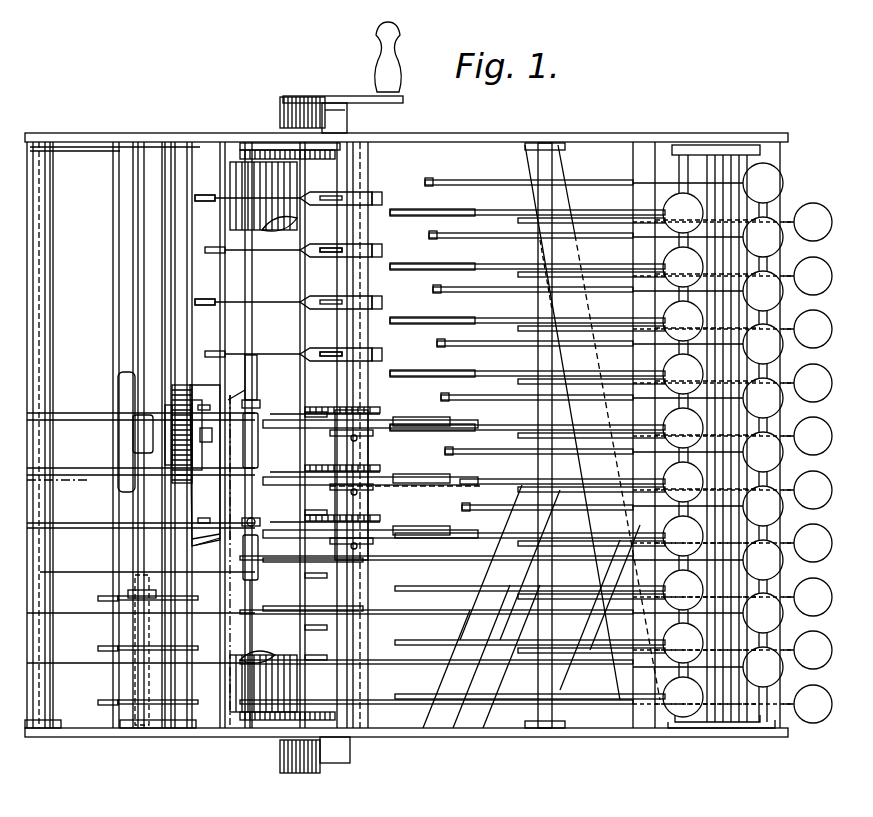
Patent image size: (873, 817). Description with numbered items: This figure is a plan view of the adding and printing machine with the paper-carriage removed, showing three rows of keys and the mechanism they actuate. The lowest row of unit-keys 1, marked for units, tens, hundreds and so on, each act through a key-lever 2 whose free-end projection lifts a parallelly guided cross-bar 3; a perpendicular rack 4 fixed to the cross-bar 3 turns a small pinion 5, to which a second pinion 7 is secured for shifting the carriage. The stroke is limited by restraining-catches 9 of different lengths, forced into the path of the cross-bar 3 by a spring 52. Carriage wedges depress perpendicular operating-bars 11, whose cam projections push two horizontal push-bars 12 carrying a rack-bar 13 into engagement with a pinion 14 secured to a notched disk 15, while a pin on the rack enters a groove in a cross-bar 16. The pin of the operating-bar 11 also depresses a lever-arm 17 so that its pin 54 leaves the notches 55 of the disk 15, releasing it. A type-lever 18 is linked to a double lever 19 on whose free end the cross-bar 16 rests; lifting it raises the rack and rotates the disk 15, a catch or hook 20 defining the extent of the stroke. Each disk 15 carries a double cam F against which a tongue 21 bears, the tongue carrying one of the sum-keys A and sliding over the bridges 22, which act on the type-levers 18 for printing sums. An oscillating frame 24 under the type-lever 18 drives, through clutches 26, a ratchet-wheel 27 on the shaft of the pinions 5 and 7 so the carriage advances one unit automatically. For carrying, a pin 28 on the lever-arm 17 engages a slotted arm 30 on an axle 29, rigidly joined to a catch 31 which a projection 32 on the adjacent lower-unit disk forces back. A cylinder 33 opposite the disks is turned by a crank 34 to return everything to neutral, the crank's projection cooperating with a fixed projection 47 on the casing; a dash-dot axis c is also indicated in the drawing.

The unit-keys 1 is at (736, 463).
The key-lever 2 is at (578, 590).
The cross-bar 3 is at (168, 372).
The perpendicular rack 4 is at (165, 470).
The small pinion 5 is at (158, 430).
The second pinion 7 is at (182, 478).
The restraining-catch 9 is at (132, 597).
The operating-bar 11 is at (205, 465).
The horizontal push-bars 12 is at (276, 250).
The rack-bar 13 is at (323, 419).
The pinion 14 is at (372, 410).
The notched disk 15 is at (452, 424).
The cross-bar 16 is at (322, 632).
The lever-arm 17 is at (238, 530).
The type-lever 18 is at (436, 441).
The double lever 19 is at (552, 435).
The catch or hook 20 is at (290, 560).
The tongues 21 is at (462, 300).
The bridges 22 is at (721, 436).
The oscillating frame 24 is at (84, 150).
The clutches 26 is at (190, 392).
The ratchet-wheel 27 is at (198, 446).
The pin 28 is at (254, 516).
The axle 29 is at (258, 392).
The arm 30 is at (260, 410).
The catch 31 is at (270, 472).
The projection 32 is at (305, 410).
The cylinder 33 is at (285, 431).
The crank 34 is at (296, 100).
The projection 47 is at (350, 128).
The spring 52 is at (105, 598).
The pin 54 is at (782, 180).
The notches 55 is at (410, 488).
The sum-keys A is at (684, 198).
The double cam F is at (346, 485).
The axis c is at (227, 560).